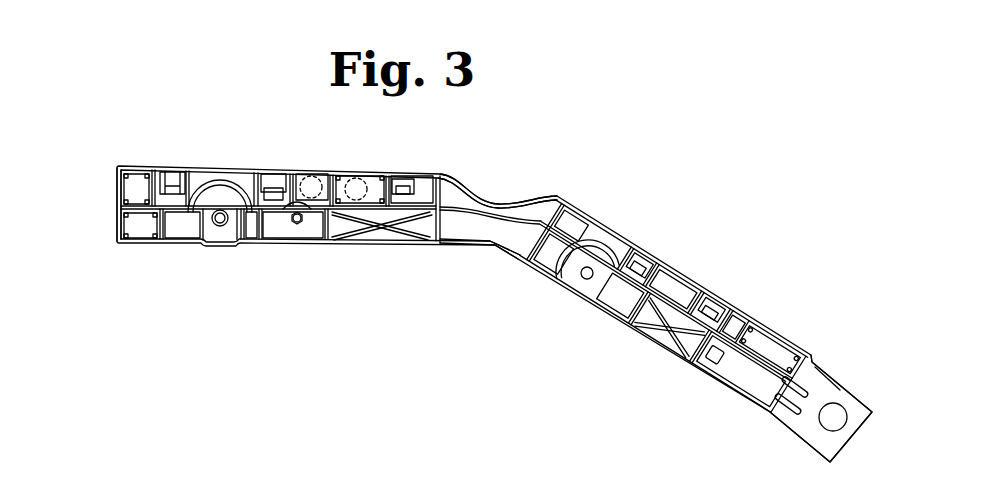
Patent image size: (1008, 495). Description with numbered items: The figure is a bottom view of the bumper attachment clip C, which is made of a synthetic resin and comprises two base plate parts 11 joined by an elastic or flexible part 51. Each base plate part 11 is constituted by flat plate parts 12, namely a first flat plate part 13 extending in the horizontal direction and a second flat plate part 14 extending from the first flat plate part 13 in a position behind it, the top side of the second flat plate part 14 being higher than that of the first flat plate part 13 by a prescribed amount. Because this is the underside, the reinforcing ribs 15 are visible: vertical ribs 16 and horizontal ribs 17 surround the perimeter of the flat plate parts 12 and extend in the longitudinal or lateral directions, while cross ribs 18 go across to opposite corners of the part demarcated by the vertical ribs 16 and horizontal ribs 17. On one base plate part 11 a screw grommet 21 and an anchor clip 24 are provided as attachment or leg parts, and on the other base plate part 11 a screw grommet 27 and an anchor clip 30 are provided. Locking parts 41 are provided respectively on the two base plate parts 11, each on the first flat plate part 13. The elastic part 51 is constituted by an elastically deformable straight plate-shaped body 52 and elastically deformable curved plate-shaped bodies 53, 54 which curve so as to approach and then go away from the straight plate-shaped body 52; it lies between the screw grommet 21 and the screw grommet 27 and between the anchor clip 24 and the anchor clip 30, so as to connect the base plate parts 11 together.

The base plate part 11 is at (154, 250).
The flat plate part 12 is at (491, 327).
The first flat plate part 13 is at (224, 178).
The second flat plate part 14 is at (313, 215).
The reinforcing ribs 15 is at (437, 294).
The vertical ribs 16 is at (118, 188).
The horizontal ribs 17 is at (390, 214).
The cross ribs 18 is at (353, 214).
The screw grommet 21 is at (222, 227).
The anchor clip 24 is at (294, 224).
The screw grommet 27 is at (582, 283).
The anchor clip 30 is at (709, 367).
The locking part 41 is at (174, 183).
The elastic part 51 is at (575, 136).
The straight plate-shaped body 52 is at (489, 216).
The curved plate-shaped body 53 is at (465, 190).
The curved plate-shaped body 54 is at (520, 242).
The bumper attachment clip C is at (823, 351).